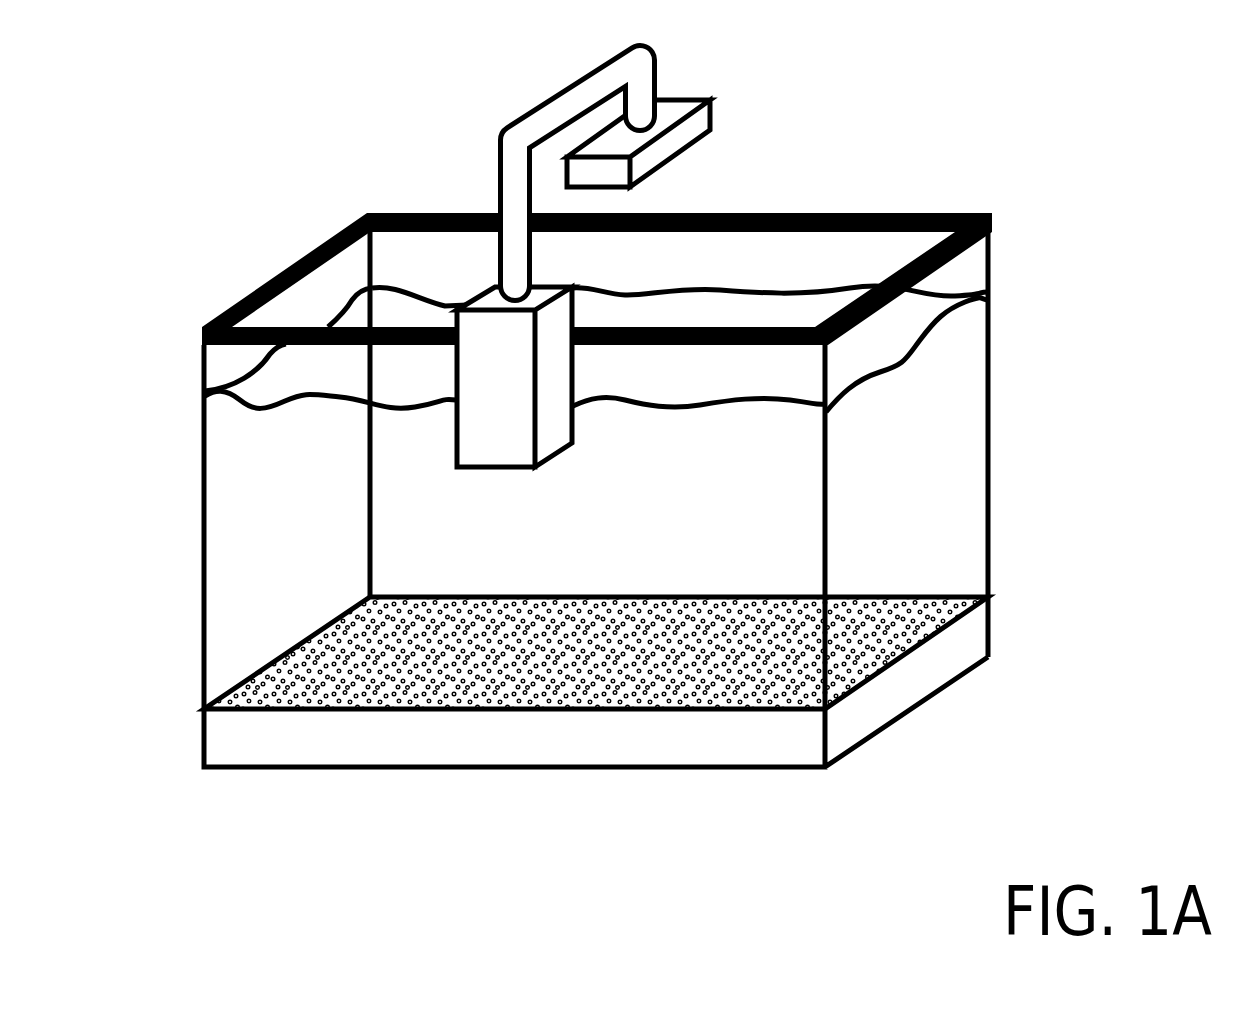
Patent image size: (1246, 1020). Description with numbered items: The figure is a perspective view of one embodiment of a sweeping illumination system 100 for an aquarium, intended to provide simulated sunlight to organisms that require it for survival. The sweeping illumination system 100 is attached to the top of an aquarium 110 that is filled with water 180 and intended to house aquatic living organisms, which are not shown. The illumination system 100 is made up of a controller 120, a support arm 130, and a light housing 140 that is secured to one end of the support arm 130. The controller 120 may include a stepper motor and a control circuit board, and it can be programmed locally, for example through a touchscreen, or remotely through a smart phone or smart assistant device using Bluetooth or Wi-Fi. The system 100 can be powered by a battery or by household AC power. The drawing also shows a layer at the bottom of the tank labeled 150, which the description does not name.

The sweeping illumination system 100 is at (622, 388).
The aquarium 110 is at (205, 417).
The controller 120 is at (470, 428).
The support arm 130 is at (570, 84).
The light housing 140 is at (695, 137).
The substrate 150 is at (960, 675).
The water 180 is at (967, 417).